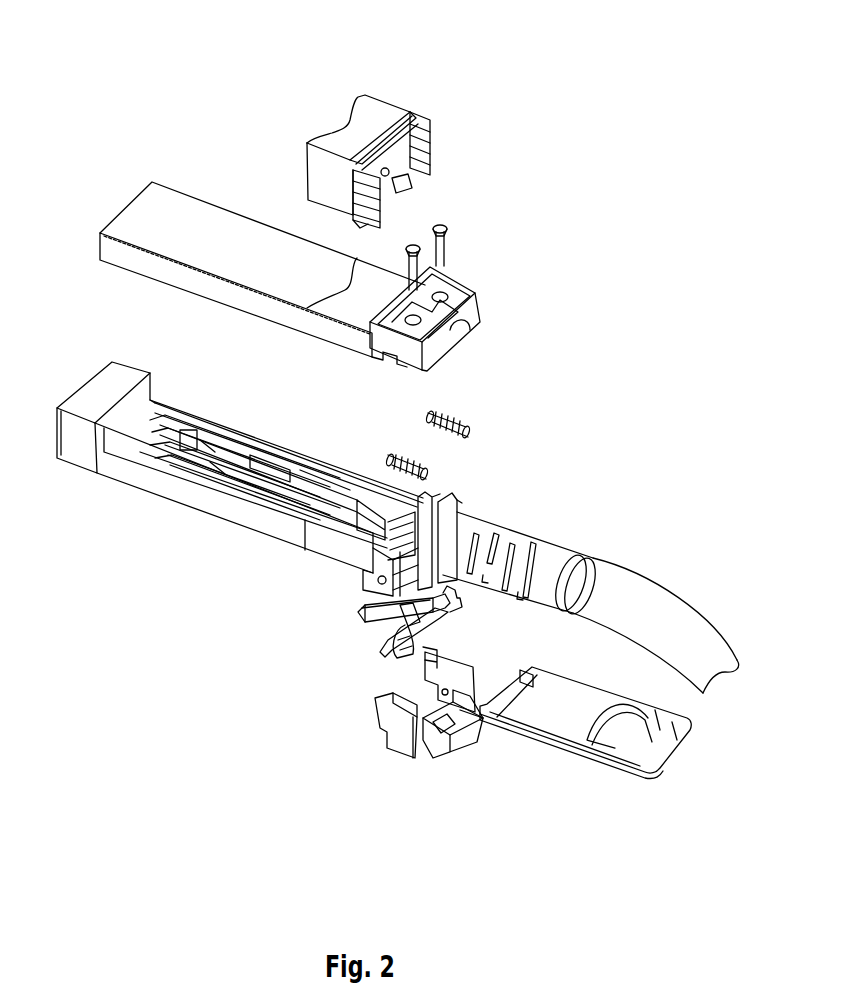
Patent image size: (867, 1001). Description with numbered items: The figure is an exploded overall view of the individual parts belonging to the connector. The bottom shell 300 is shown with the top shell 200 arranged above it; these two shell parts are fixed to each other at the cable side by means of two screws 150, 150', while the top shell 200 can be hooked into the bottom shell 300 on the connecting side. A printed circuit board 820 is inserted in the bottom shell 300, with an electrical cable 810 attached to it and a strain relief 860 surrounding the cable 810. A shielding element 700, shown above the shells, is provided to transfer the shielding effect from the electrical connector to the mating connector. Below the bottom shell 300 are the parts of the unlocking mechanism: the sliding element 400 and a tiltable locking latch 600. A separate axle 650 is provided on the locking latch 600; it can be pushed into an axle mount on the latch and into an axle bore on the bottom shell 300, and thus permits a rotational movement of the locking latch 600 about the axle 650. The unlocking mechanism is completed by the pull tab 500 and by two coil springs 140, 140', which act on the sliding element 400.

The top shell 200 is at (202, 165).
The shielding element 700 is at (372, 98).
The screw 150 is at (470, 299).
The screw 150' is at (497, 201).
The bottom shell 300 is at (158, 513).
The printed circuit board 820 is at (130, 432).
The coil spring 140 is at (481, 462).
The coil spring 140' is at (515, 400).
The strain relief 860 is at (555, 568).
The electrical cable 810 is at (653, 620).
The locking latch 600 is at (352, 642).
The axle 650 is at (393, 633).
The sliding element 400 is at (386, 770).
The pull tab 500 is at (545, 713).